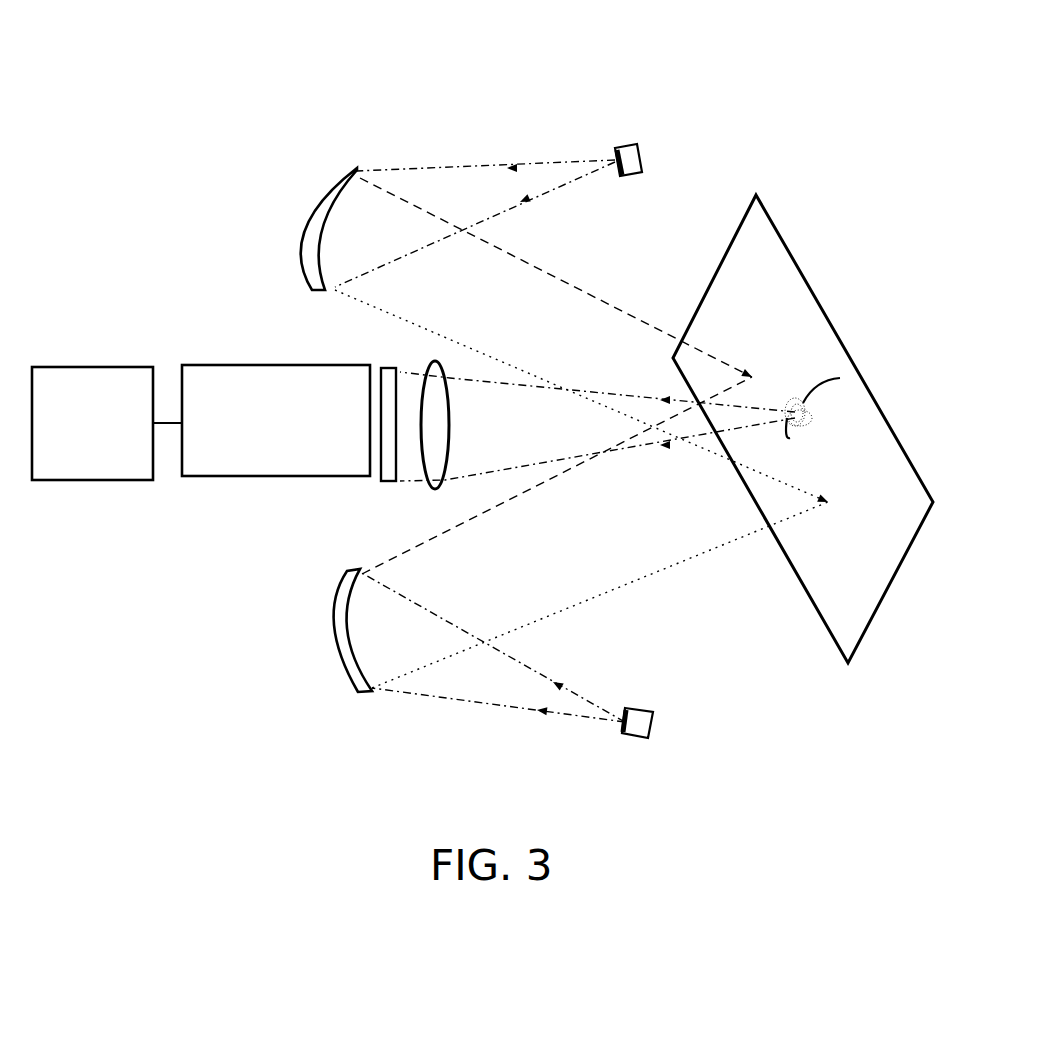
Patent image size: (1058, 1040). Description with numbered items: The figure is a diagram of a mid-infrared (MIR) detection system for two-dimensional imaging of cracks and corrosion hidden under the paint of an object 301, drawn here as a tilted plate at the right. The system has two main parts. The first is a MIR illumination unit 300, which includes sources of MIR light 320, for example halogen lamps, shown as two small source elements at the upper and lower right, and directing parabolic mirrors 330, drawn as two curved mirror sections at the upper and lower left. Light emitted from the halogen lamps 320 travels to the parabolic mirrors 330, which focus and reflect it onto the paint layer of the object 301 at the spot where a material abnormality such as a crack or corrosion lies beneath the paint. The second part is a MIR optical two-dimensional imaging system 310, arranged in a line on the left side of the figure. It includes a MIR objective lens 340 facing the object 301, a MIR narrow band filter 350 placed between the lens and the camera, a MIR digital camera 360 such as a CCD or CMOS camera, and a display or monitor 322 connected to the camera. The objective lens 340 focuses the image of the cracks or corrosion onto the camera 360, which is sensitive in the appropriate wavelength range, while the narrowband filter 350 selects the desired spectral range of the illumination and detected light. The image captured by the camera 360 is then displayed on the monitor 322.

The MIR illumination unit 300 is at (665, 118).
The object 301 is at (803, 429).
The MIR optical 2-D imaging system 310 is at (150, 326).
The source of MIR light 320 is at (646, 158).
The display 322 is at (92, 423).
The directing parabolic mirrors 330 is at (323, 187).
The MIR objective lens 340 is at (452, 444).
The MIR narrow band filter 350 is at (395, 366).
The MIR digital camera 360 is at (276, 420).